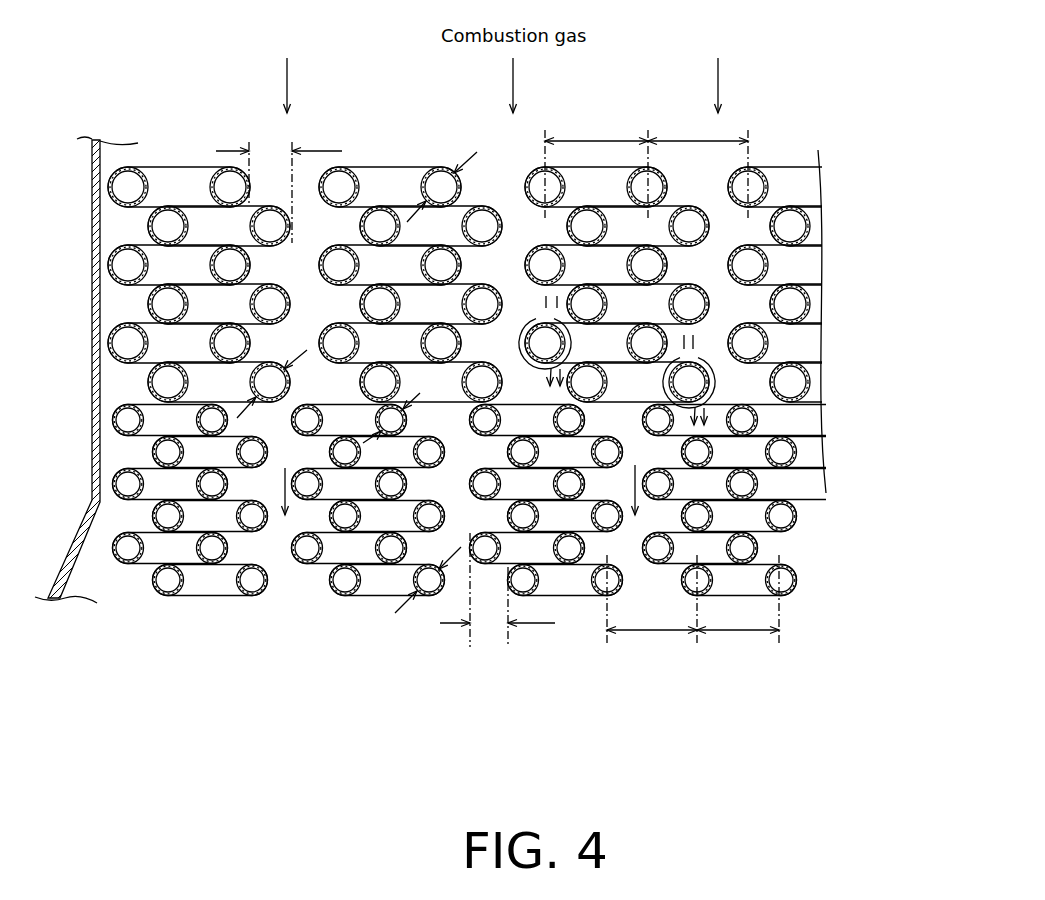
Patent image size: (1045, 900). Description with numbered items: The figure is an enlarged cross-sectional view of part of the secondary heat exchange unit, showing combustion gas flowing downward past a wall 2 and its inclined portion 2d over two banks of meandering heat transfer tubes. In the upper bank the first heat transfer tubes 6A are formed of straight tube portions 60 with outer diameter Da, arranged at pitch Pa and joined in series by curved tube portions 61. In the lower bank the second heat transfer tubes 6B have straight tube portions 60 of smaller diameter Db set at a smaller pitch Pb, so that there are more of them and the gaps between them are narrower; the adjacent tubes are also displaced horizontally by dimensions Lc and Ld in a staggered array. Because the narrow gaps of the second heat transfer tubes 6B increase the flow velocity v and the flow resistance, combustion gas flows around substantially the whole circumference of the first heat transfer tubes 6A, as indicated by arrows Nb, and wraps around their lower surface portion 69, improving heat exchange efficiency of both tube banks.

The furnace wall 2 is at (90, 188).
The inclined wall portion 2d is at (90, 243).
The first heat transfer tube 6A is at (774, 268).
The second heat transfer tube 6B is at (761, 487).
The straight tube portion 60 is at (130, 166).
The curved tube portion 61 is at (163, 166).
The lower surface portion 69 is at (546, 382).